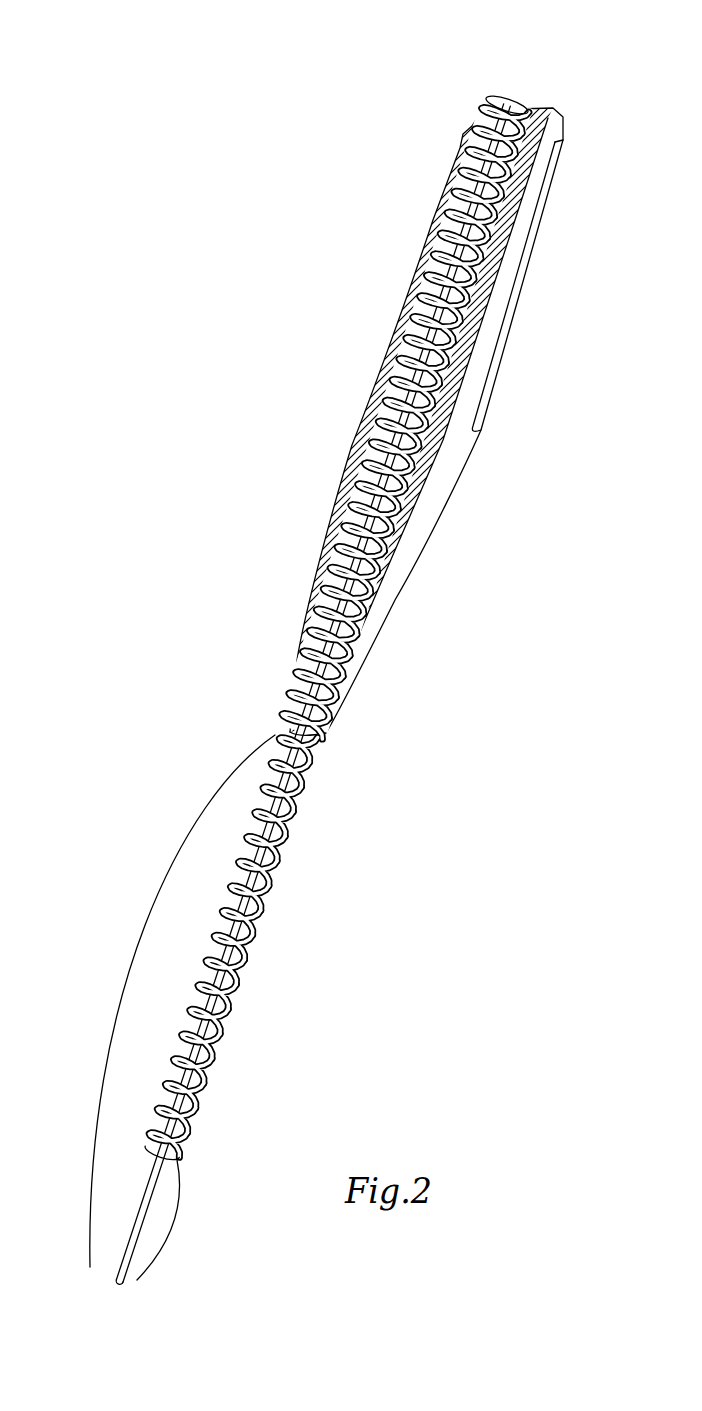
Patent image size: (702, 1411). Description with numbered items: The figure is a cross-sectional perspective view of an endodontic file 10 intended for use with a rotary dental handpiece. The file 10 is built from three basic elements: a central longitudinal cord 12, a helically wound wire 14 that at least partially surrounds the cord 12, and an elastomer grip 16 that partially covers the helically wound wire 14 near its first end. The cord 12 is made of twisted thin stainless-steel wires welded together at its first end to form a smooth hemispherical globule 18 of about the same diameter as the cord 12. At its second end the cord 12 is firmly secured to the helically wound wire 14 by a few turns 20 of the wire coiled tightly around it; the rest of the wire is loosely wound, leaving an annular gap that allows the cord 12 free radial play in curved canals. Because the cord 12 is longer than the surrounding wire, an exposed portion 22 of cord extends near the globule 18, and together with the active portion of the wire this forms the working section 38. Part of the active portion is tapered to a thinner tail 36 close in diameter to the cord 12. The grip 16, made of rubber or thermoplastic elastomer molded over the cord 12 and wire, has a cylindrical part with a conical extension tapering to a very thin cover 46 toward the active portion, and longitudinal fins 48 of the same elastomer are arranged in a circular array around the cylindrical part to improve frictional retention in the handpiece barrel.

The endodontic file 10 is at (326, 695).
The central longitudinal cord 12 is at (148, 1183).
The helically wound wire 14 is at (213, 947).
The elastomer grip 16 is at (456, 500).
The hemispherical globule 18 is at (117, 1283).
The few turns 20 is at (503, 106).
The exposed portion 22 is at (177, 1225).
The thinner tail 36 is at (178, 1152).
The working section 38 is at (143, 913).
The thin cover 46 is at (327, 730).
The longitudinal fins 48 is at (510, 360).